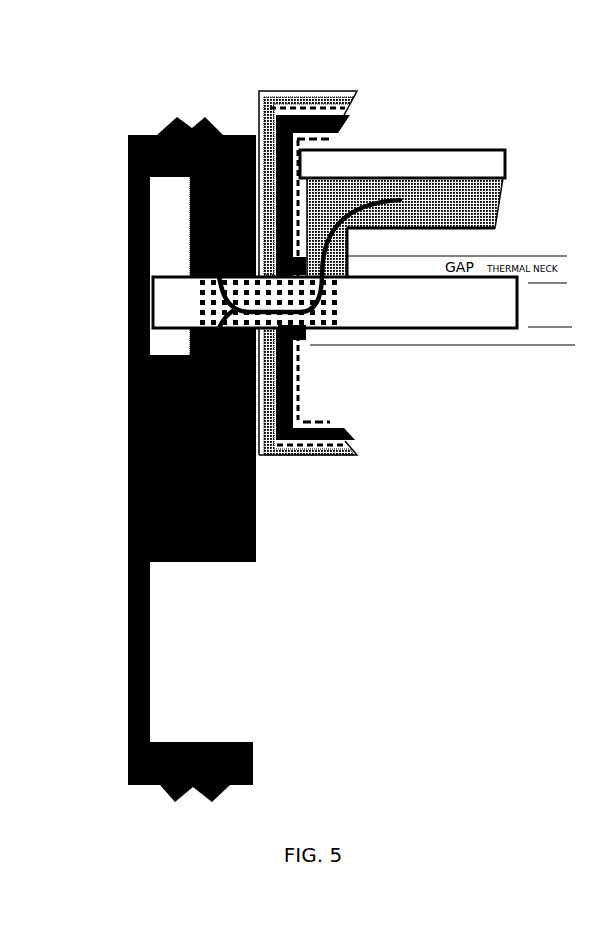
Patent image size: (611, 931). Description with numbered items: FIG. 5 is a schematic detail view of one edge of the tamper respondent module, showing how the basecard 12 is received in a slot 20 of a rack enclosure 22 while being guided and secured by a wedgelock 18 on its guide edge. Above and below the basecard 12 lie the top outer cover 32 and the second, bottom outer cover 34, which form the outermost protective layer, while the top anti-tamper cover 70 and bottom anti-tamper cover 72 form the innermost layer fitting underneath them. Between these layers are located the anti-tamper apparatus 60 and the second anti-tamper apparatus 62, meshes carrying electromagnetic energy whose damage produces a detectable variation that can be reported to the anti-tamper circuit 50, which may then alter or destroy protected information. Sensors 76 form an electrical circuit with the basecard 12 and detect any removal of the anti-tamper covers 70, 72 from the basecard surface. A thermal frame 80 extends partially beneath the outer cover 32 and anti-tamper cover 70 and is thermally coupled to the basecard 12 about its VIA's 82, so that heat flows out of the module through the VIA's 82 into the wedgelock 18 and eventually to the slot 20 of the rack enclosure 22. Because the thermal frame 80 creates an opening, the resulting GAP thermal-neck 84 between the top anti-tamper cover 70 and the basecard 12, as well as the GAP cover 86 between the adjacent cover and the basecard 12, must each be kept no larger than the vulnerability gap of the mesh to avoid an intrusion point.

The basecard 12 is at (188, 301).
The wedgelock 18 is at (188, 223).
The slot 20 is at (158, 255).
The rack enclosure 22 is at (149, 125).
The outer cover 32 is at (259, 90).
The second outer cover 34 is at (303, 462).
The anti-tamper circuit 50 is at (383, 148).
The anti-tamper apparatus 60 is at (290, 106).
The second anti-tamper apparatus 62 is at (333, 453).
The top anti-tamper cover 70 is at (350, 115).
The bottom anti-tamper cover 72 is at (362, 435).
The sensor 76 is at (306, 262).
The thermal frame 80 is at (407, 190).
The VIA's 82 is at (333, 308).
The GAP thermal-neck 84 is at (550, 305).
The GAP cover 86 is at (568, 300).